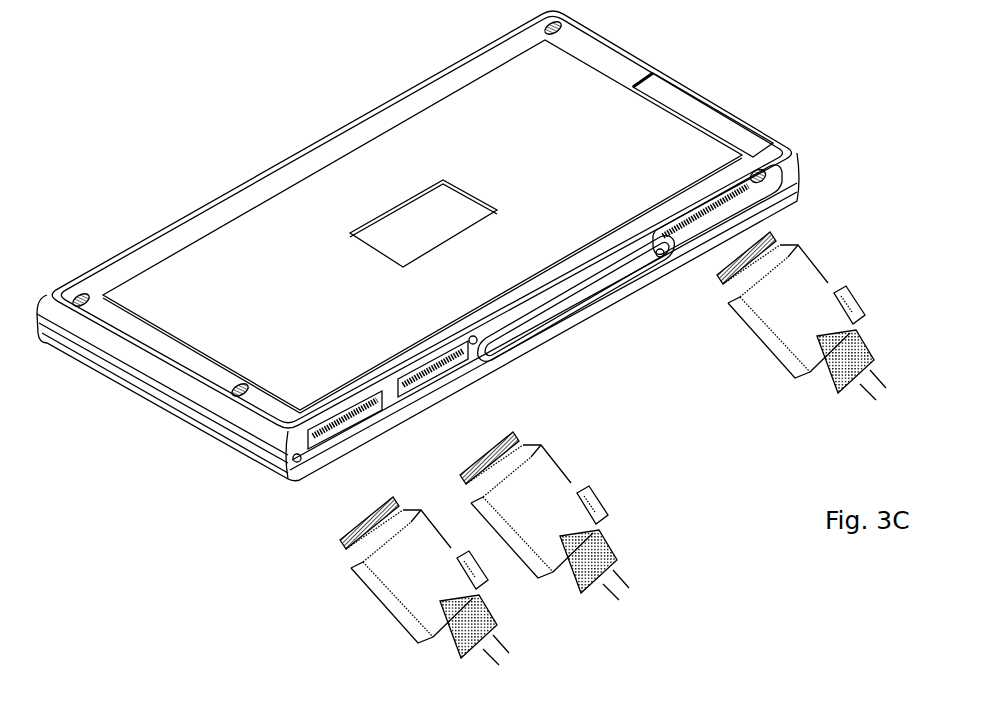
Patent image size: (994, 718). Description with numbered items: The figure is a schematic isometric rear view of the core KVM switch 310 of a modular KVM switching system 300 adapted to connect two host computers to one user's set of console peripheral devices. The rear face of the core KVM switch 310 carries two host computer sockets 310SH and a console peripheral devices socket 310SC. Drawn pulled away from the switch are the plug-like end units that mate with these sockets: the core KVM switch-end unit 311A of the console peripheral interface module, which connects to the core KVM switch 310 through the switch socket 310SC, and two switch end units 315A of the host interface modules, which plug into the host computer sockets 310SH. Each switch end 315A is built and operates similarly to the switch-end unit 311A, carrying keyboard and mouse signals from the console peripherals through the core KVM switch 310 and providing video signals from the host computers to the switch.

The modular KVM switching system 300 is at (206, 99).
The core KVM switch 310 is at (561, 142).
The host computer sockets 310SH is at (413, 358).
The console peripheral devices socket 310SC is at (692, 217).
The core KVM switch-end unit 311A is at (827, 284).
The switch end of host interface module 315A is at (593, 441).